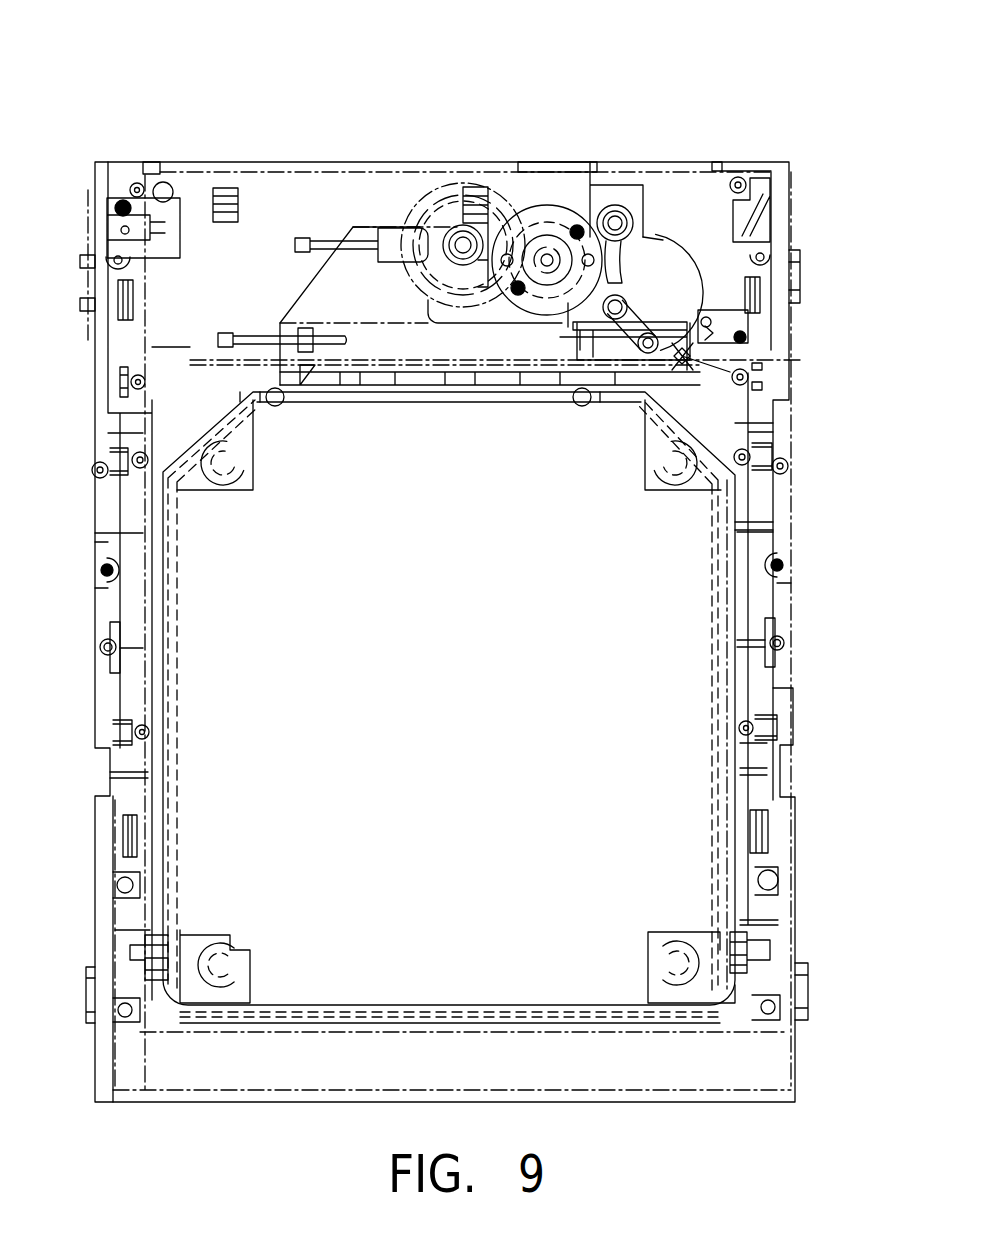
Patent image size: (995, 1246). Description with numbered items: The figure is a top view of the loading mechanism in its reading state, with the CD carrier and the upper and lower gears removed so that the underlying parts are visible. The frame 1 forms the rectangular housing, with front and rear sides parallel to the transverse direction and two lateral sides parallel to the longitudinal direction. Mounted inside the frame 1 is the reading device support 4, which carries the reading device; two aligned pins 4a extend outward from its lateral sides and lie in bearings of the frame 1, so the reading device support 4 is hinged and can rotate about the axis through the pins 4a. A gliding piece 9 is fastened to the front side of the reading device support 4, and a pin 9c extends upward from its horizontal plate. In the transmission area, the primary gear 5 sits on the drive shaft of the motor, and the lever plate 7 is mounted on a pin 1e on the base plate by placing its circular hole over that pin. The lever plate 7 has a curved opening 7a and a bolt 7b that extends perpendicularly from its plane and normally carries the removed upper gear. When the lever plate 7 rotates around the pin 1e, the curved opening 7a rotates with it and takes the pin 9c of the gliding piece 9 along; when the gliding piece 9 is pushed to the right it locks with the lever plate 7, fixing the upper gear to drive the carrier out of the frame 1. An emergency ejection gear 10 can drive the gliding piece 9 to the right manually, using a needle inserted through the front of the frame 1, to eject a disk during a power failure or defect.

The frame 1 is at (787, 608).
The pin 1e is at (570, 317).
The reading device support 4 is at (725, 697).
The pins 4a is at (127, 957).
The primary gear 5 is at (543, 206).
The lever plate 7 is at (660, 262).
The curved opening 7a is at (648, 322).
The bolt 7b is at (620, 208).
The gliding piece 9 is at (340, 277).
The pin 9c is at (687, 343).
The emergency ejection gear 10 is at (432, 180).